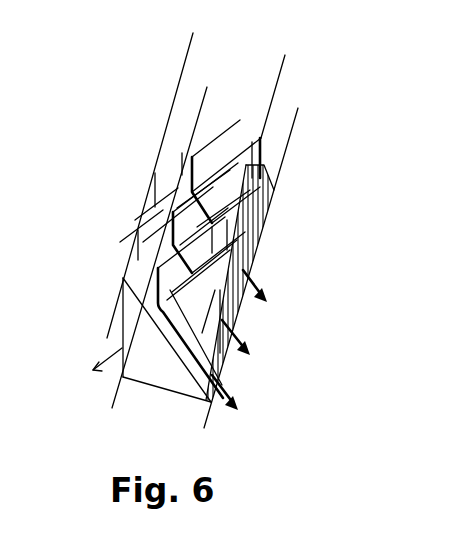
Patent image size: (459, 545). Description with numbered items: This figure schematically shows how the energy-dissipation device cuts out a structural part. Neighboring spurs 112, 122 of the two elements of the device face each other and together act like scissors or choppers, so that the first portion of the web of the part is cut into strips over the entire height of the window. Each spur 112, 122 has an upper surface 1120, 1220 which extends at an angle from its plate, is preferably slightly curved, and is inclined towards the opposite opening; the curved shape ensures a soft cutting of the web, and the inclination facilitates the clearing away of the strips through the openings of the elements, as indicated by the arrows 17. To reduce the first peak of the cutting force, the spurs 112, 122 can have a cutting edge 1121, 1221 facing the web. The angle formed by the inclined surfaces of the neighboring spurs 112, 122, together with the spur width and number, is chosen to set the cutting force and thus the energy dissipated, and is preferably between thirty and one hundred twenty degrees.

The cutting edge 1221 is at (153, 177).
The spur 122 is at (183, 160).
The cutting edge 1121 is at (223, 160).
The upper surface 1120 is at (242, 163).
The spur 112 is at (254, 186).
The upper surface 1220 is at (181, 170).
The clearing away of the strips 17 is at (256, 280).